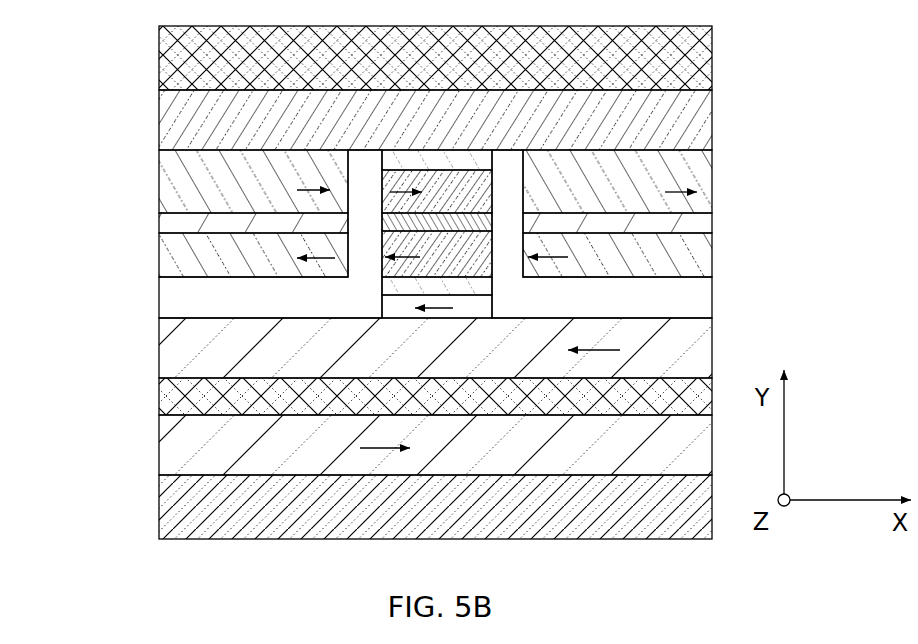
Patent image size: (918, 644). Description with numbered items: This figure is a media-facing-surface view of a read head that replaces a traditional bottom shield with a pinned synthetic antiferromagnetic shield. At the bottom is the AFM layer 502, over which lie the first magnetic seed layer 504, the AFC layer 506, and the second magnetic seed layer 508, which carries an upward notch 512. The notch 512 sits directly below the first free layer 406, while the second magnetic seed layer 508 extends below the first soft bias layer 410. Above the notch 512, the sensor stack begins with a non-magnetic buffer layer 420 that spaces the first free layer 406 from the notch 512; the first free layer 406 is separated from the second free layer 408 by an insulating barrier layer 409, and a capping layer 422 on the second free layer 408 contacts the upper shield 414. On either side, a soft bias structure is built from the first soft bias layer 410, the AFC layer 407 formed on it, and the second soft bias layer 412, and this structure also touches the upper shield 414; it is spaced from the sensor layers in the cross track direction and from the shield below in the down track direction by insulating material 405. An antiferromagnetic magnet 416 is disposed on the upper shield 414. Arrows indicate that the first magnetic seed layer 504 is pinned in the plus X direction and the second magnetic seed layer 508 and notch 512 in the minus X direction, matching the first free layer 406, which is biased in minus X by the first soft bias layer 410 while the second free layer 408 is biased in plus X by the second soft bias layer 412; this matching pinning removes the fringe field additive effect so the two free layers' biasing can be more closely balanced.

The antiferromagnetic magnet 416 is at (414, 67).
The upper shield 414 is at (414, 135).
The second soft bias layer 412 is at (239, 195).
The antiferromagnetically coupled (AFC) layer 407 is at (160, 226).
The first soft bias layer 410 is at (234, 267).
The insulating material 405 is at (212, 309).
The capping layer 422 is at (381, 160).
The second free layer 408 is at (442, 204).
The barrier layer 409 is at (380, 229).
The first free layer 406 is at (442, 269).
The non-magnetic buffer layer 420 is at (380, 292).
The notch 512 is at (380, 305).
The second magnetic seed layer 508 is at (475, 360).
The AFM coupling (AFC) layer 506 is at (475, 407).
The first magnetic seed layer 504 is at (475, 455).
The AFM layer 502 is at (475, 519).